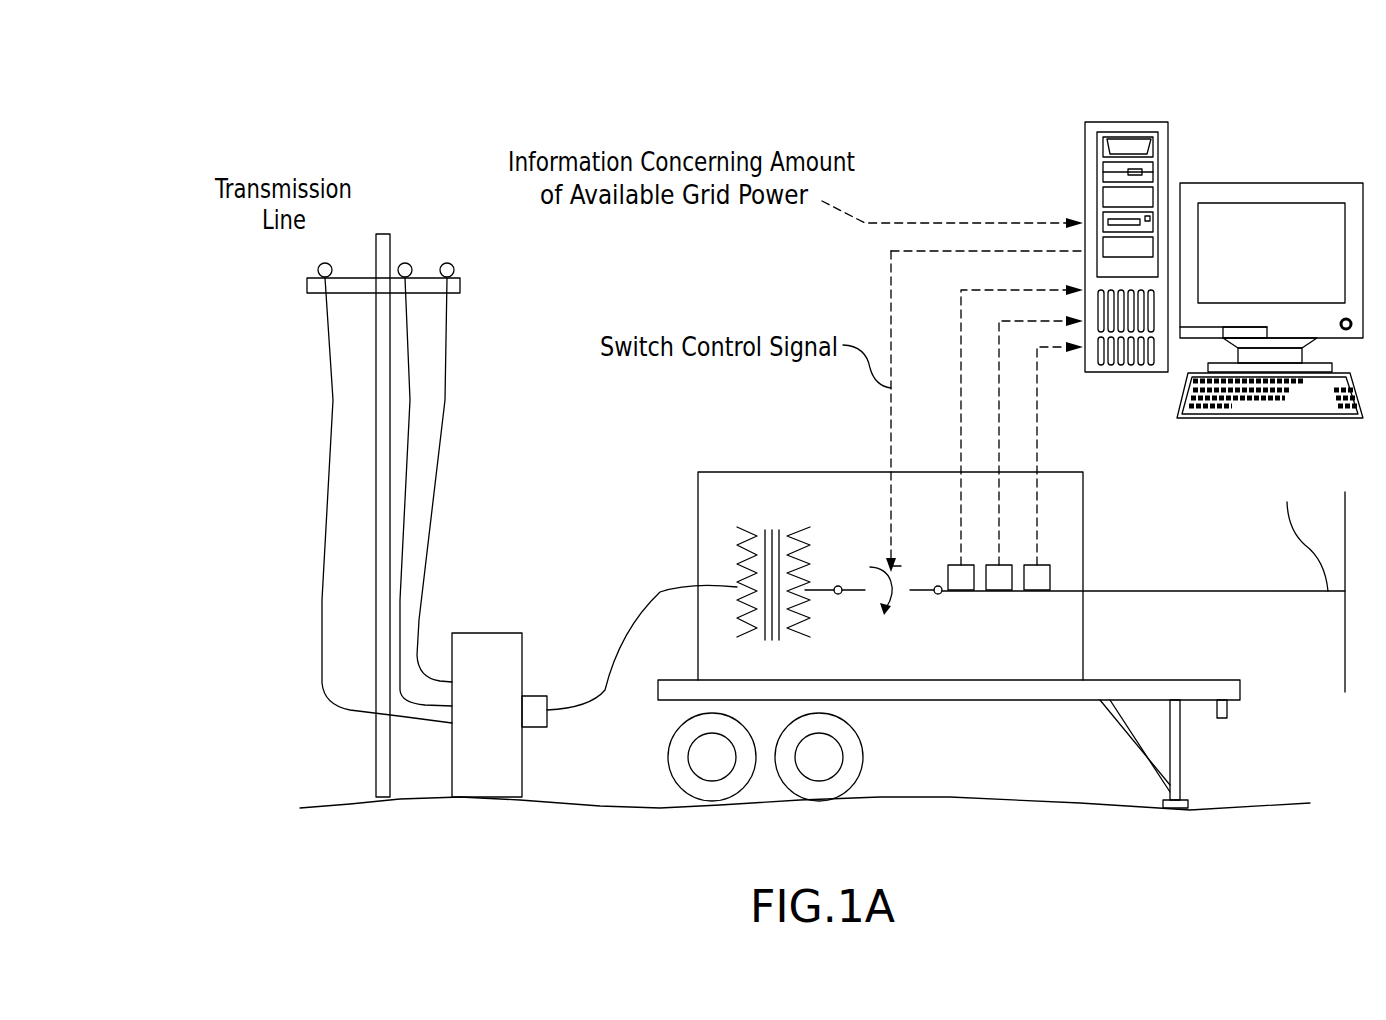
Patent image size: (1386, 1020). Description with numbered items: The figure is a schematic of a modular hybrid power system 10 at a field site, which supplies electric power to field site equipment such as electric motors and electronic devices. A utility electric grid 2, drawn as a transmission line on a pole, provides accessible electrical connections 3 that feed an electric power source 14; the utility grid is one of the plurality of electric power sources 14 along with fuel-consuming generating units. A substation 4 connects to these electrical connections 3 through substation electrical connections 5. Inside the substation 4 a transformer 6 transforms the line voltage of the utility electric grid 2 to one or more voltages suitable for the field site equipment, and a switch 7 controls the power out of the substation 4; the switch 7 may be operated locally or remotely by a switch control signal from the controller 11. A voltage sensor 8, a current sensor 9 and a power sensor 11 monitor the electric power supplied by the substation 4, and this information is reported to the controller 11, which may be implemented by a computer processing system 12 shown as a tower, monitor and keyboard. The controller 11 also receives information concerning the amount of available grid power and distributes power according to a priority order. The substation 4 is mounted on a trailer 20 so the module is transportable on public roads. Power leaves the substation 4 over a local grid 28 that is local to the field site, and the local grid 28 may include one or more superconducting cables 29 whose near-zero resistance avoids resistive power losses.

The modular hybrid power system 10 is at (490, 192).
The utility electric grid 2 is at (478, 250).
The electrical connections 3 is at (478, 822).
The electric power source 14 is at (562, 588).
The substation electrical connections 5 is at (532, 715).
The substation 4 is at (745, 472).
The transformer 6 is at (740, 542).
The switch 7 is at (865, 590).
The voltage sensor 8 is at (963, 583).
The current sensor 9 is at (998, 583).
The controller 11 is at (1083, 154).
The computer processing system 12 is at (1103, 122).
The trailer 20 is at (1009, 735).
The local grid 28 is at (1262, 591).
The superconducting cable 29 is at (1345, 510).